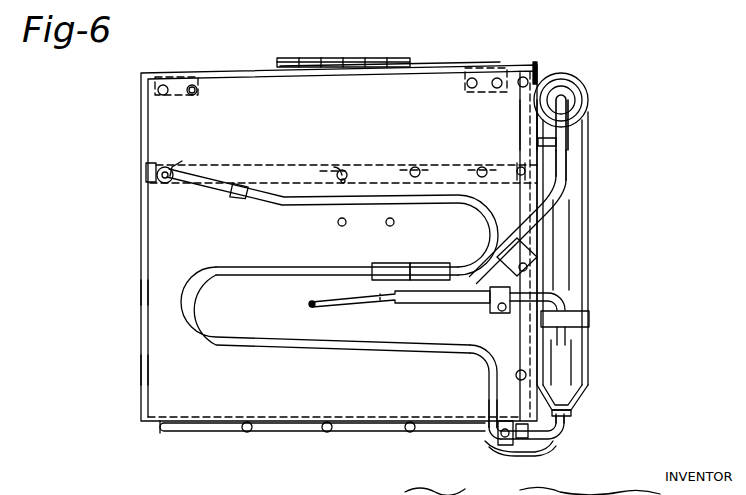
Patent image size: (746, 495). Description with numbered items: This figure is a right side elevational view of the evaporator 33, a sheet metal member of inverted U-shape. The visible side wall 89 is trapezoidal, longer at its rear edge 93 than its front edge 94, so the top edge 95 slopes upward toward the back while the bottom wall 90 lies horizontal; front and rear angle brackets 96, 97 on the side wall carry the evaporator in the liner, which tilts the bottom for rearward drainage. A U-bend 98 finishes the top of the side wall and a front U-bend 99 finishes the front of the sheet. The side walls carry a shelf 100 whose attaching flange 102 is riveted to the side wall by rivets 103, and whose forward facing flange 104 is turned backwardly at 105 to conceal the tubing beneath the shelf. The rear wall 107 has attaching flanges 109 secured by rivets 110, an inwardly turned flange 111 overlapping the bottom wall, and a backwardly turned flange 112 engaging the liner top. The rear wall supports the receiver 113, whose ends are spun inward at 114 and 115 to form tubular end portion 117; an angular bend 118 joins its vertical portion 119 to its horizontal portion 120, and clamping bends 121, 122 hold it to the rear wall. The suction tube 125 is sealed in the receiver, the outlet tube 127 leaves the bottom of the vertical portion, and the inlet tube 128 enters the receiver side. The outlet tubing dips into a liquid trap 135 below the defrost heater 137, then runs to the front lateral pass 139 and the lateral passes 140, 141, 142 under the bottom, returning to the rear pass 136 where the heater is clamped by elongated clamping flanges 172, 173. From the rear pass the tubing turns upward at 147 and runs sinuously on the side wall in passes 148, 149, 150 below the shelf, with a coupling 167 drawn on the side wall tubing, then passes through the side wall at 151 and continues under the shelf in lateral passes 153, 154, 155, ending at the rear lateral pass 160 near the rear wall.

The evaporator 33 is at (150, 292).
The side wall 89 is at (160, 370).
The bottom wall 90 is at (373, 416).
The rear edge 93 is at (540, 242).
The front edge 94 is at (142, 235).
The top edge 95 is at (435, 62).
The front angle bracket 96 is at (193, 96).
The rear angle bracket 97 is at (487, 60).
The U-bend 98 is at (255, 68).
The front U-bend 99 is at (150, 115).
The shelf 100 is at (385, 165).
The attaching flange 102 is at (370, 183).
The rivets 103 is at (340, 171).
The facing flange 104 is at (145, 173).
The backwardly turned portion 105 is at (155, 182).
The rear wall 107 is at (548, 195).
The attaching flanges 109 is at (519, 127).
The rivets 110 is at (530, 82).
The inwardly turned flange 111 is at (545, 442).
The backwardly turned flange 112 is at (536, 62).
The receiver 113 is at (588, 252).
The spun-in end 114 is at (585, 389).
The spun-in end 115 is at (571, 82).
The tubular end portion 117 is at (577, 93).
The angular bend 118 is at (587, 157).
The vertical portion 119 is at (588, 342).
The horizontal portion 120 is at (581, 110).
The clamping bend 121 is at (585, 124).
The clamping bend 122 is at (590, 318).
The suction tube 125 is at (567, 147).
The outlet tube 127 is at (566, 428).
The inlet tube 128 is at (562, 296).
The liquid trap 135 is at (500, 446).
The rear pass 136 is at (480, 414).
The defrost heater 137 is at (520, 423).
The front lateral pass 139 is at (167, 431).
The lateral pass 140 is at (249, 431).
The lateral pass 141 is at (327, 431).
The lateral pass 142 is at (403, 433).
The vertical tubing 147 is at (487, 382).
The pass 148 is at (330, 360).
The pass 149 is at (368, 257).
The pass 150 is at (318, 217).
The side wall passage 151 is at (170, 165).
The lateral pass 153 is at (287, 147).
The lateral pass 154 is at (338, 178).
The lateral pass 155 is at (444, 154).
The rear lateral pass 160 is at (490, 152).
The coupling 167 is at (233, 200).
The clamping flange 172 is at (484, 444).
The clamping flange 173 is at (525, 452).